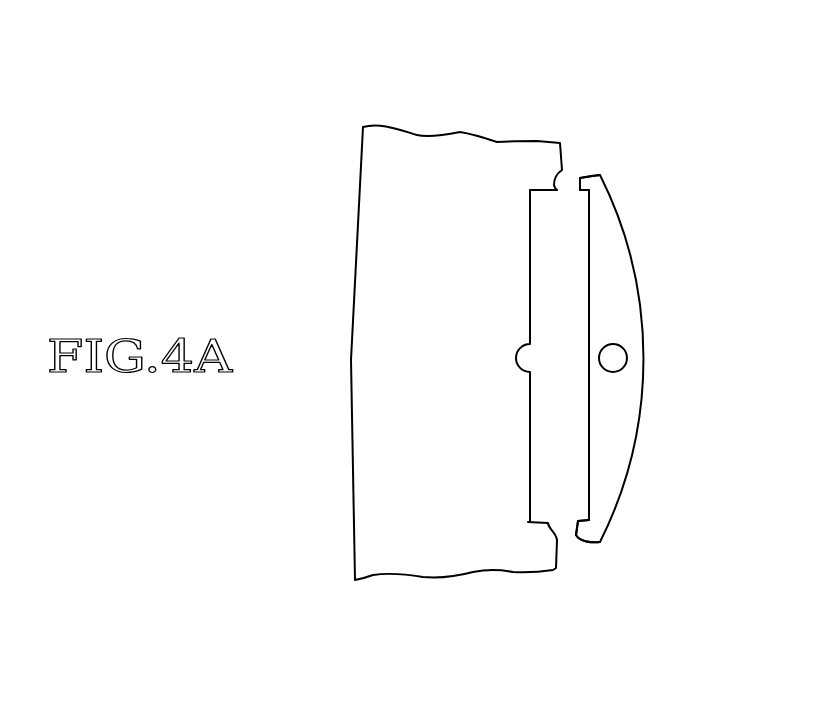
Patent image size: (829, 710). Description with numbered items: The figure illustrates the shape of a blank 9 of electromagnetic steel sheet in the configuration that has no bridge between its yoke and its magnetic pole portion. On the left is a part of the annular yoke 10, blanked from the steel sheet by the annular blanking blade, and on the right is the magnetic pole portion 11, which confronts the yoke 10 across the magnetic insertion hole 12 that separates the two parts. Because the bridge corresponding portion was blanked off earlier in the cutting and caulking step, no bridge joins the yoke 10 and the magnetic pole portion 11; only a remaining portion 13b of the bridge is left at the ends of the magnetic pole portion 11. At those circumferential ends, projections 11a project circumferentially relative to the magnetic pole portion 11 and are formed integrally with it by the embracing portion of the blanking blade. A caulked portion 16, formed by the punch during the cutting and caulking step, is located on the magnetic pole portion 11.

The blank 9 is at (466, 91).
The yoke 10 is at (371, 364).
The magnetic pole portion 11 is at (612, 232).
The projection 11a is at (603, 175).
The magnetic insertion hole 12 is at (600, 277).
The remaining portion 13b is at (588, 175).
The caulked portion 16 is at (628, 356).